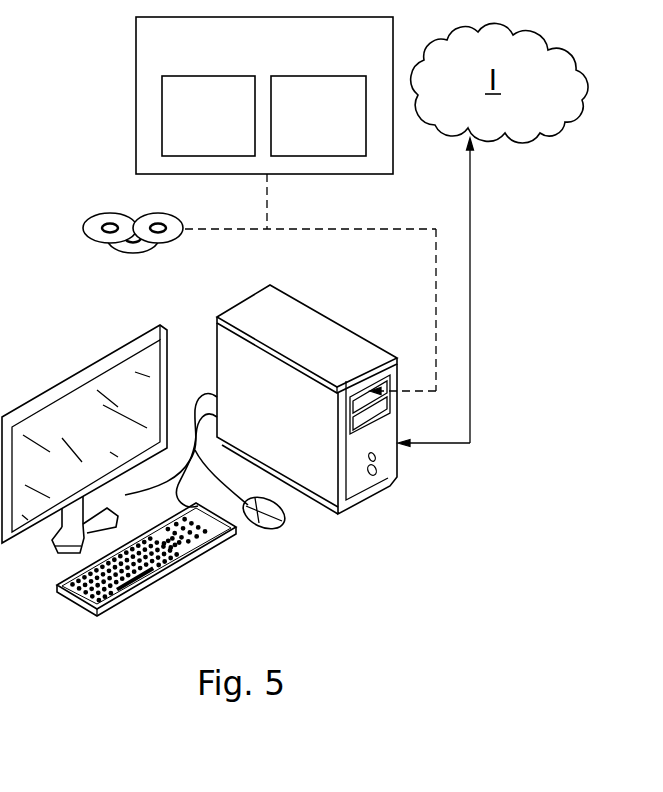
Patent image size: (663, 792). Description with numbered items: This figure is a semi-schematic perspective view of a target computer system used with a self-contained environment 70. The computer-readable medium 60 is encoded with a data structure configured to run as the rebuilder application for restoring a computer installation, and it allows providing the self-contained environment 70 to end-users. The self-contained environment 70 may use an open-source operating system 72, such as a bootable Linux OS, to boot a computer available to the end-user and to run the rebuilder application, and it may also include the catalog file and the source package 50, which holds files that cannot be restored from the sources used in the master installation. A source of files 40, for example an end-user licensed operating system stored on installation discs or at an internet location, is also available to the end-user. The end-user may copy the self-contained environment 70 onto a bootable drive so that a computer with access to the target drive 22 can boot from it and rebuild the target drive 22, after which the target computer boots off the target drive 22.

The computer-readable medium 60 is at (221, 95).
The self-contained environment 70 is at (264, 95).
The open-source operating system 72 is at (208, 116).
The source package 50 is at (318, 116).
The source of files 40 is at (148, 213).
The target drive 22 is at (368, 415).